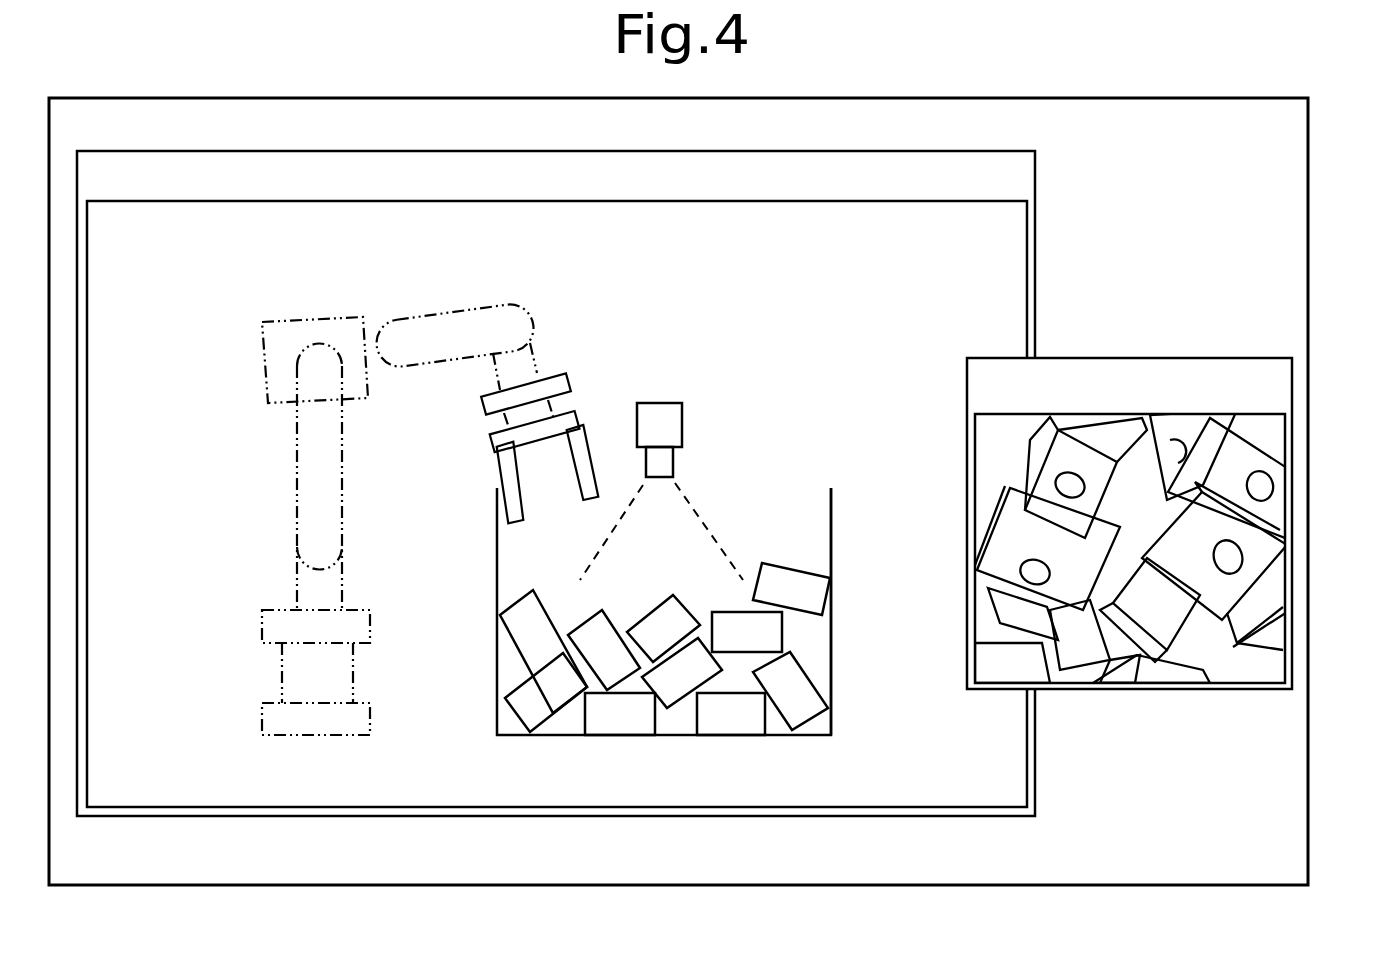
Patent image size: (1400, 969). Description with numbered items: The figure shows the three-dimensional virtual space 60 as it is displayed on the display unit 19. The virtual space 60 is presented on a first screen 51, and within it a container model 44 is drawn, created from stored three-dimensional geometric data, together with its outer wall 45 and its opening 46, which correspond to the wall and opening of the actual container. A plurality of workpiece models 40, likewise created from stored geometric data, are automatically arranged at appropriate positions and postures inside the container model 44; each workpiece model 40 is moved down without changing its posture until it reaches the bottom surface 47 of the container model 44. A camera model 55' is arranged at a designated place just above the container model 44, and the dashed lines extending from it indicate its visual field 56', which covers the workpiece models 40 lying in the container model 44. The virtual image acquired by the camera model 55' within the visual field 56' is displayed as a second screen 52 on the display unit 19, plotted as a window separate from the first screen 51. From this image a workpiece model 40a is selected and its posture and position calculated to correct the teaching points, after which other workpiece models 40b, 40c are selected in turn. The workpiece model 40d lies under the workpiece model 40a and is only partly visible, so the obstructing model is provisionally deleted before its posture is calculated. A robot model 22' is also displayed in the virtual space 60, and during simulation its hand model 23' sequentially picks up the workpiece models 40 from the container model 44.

The display unit 19 is at (1247, 173).
The first screen 51 is at (927, 215).
The three-dimensional virtual space 60 is at (203, 270).
The robot model 22' is at (351, 518).
The hand model 23' is at (557, 399).
The camera model 55' is at (691, 413).
The visual field 56' is at (669, 520).
The opening 46 is at (773, 473).
The container model 44 is at (840, 505).
The outer wall 45 is at (832, 548).
The workpiece models 40 is at (610, 718).
The bottom surface 47 is at (668, 730).
The second screen 52 is at (1282, 425).
The workpiece model 40a is at (1068, 517).
The workpiece model 40b is at (1225, 590).
The workpiece model 40c is at (1160, 618).
The workpiece model 40d is at (1160, 437).